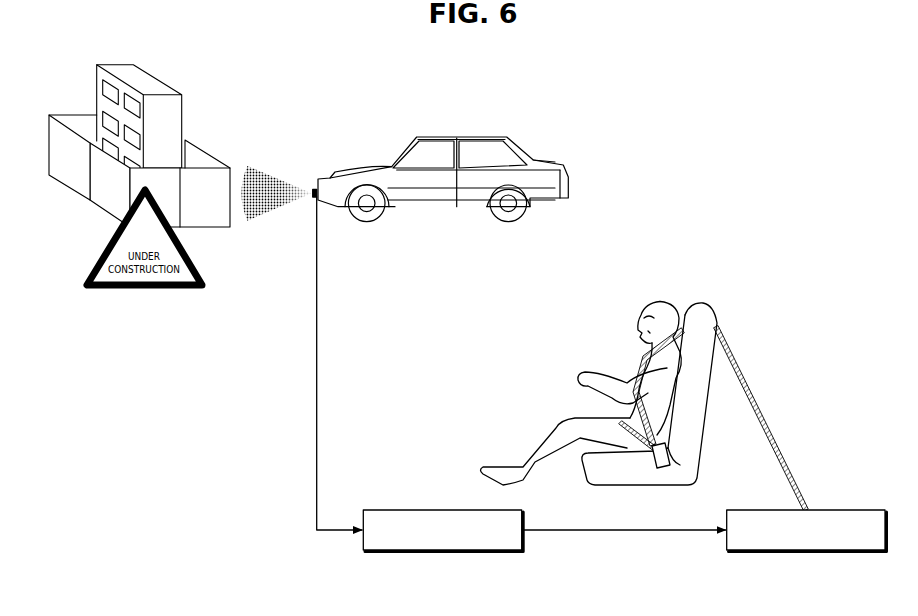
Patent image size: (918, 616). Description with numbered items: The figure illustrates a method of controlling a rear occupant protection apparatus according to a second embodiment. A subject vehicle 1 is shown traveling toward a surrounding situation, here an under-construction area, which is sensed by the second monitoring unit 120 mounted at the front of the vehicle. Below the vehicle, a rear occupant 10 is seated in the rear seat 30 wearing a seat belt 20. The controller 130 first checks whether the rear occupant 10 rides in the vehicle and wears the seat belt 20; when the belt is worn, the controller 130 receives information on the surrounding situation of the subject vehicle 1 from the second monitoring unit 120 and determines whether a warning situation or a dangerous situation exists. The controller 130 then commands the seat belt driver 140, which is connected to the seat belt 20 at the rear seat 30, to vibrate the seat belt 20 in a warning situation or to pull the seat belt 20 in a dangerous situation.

The subject vehicle 1 is at (563, 164).
The second monitoring unit 120 is at (315, 188).
The rear occupant 10 is at (661, 300).
The seat belt 20 is at (637, 360).
The rear seat 30 is at (703, 306).
The controller 130 is at (481, 552).
The seat belt driver 140 is at (840, 552).